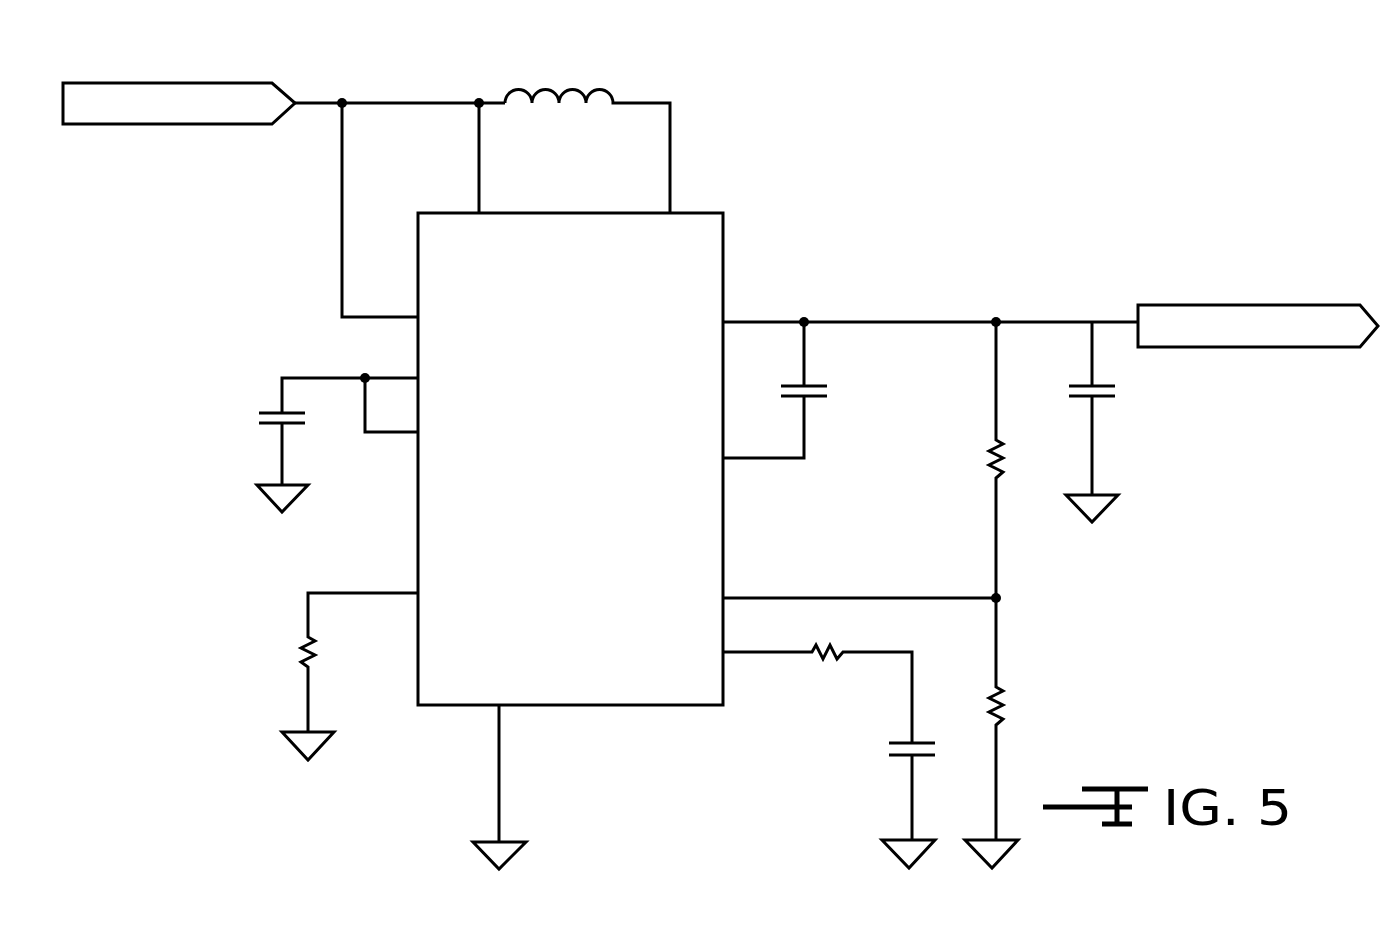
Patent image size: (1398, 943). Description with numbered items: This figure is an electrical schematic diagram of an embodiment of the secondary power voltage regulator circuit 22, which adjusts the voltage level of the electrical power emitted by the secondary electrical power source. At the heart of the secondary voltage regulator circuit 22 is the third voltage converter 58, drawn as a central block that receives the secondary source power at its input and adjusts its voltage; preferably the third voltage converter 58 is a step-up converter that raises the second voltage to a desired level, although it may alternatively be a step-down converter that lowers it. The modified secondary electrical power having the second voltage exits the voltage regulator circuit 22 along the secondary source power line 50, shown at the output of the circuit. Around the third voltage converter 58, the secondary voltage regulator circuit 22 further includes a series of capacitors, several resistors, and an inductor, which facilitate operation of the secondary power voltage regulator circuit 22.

The secondary power voltage regulator circuit 22 is at (963, 182).
The secondary source power line 50 is at (1125, 322).
The third voltage converter 58 is at (658, 670).